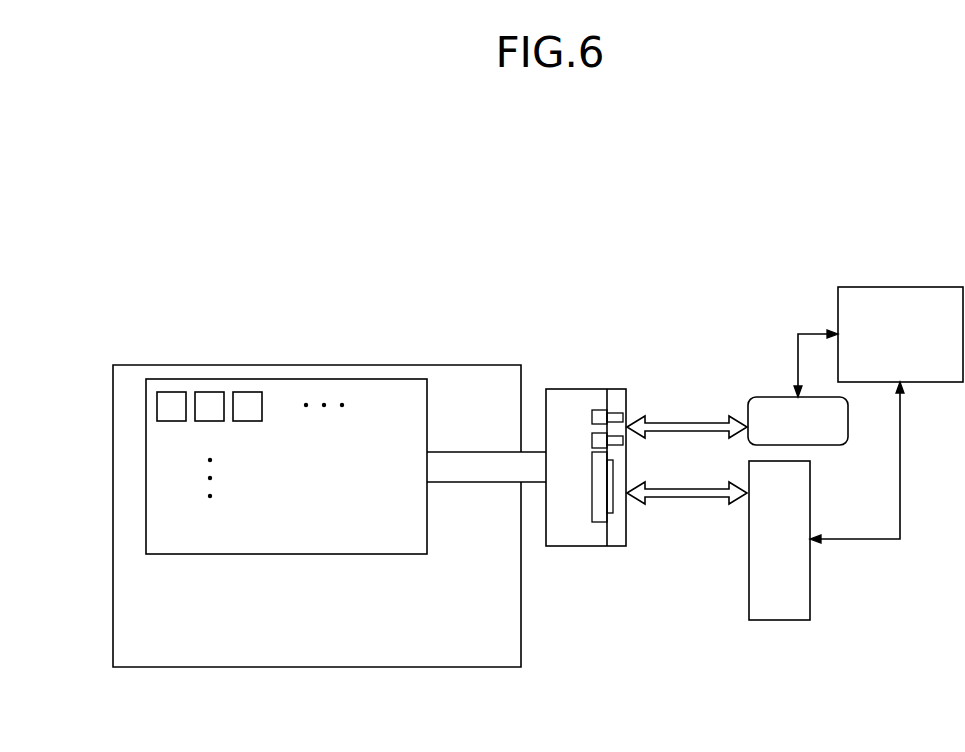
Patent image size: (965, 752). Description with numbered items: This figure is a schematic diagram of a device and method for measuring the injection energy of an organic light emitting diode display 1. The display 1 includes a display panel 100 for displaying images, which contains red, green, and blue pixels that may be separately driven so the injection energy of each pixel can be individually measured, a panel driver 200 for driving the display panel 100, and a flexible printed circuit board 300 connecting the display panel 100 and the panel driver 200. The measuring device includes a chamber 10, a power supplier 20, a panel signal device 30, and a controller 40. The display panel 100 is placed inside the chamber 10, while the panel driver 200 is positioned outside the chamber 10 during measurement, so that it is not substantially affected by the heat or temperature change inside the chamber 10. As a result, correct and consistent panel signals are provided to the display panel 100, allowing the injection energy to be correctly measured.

The organic light emitting diode (OLED) display 1 is at (328, 293).
The chamber 10 is at (296, 668).
The display panel 100 is at (344, 379).
The panel driver 200 is at (586, 389).
The flexible printed circuit board (FPCB) 300 is at (475, 452).
The power supplier 20 is at (771, 397).
The panel signal device 30 is at (810, 583).
The controller 40 is at (899, 287).